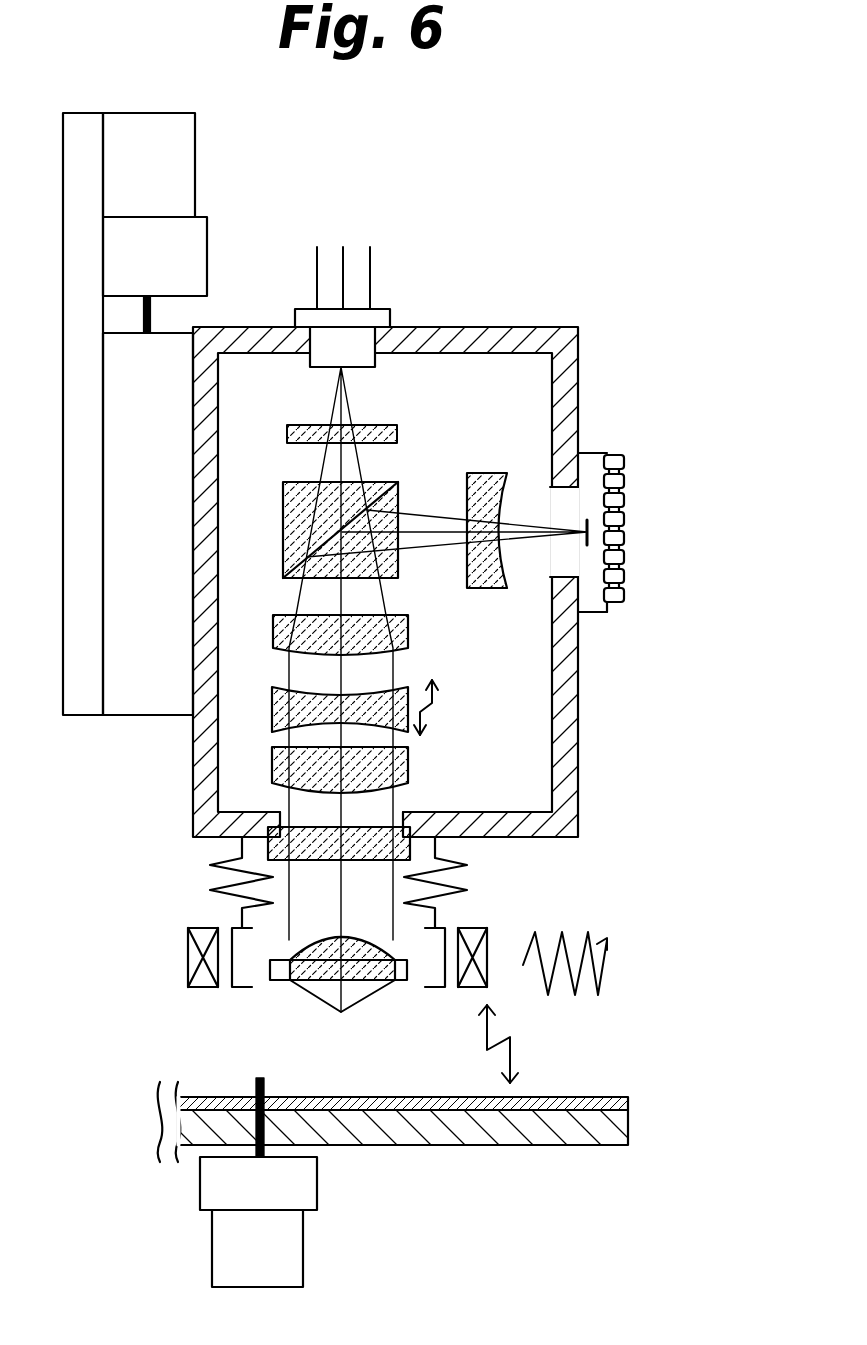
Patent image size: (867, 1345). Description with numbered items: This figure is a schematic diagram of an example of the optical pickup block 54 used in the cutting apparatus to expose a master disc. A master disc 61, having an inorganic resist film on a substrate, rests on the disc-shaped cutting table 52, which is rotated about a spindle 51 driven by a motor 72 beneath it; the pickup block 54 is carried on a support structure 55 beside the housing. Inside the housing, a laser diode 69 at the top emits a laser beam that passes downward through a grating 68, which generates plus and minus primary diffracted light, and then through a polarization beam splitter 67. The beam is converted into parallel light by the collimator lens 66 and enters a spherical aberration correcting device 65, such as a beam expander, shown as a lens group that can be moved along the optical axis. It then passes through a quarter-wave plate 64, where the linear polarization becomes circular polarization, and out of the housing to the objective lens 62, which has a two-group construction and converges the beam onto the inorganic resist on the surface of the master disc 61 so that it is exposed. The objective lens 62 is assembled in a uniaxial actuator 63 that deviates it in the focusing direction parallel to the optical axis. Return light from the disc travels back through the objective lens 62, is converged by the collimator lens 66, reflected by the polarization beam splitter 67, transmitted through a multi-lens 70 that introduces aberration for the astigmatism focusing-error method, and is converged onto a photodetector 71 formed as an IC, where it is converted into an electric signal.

The spindle 51 is at (262, 1078).
The cutting table 52 is at (548, 1135).
The optical pickup block 54 is at (520, 328).
The head feed mechanism 55 is at (187, 245).
The master disc 61 is at (548, 1100).
The objective lens 62 is at (400, 982).
The uniaxial actuator 63 is at (487, 930).
The quarter-wave plate 64 is at (410, 851).
The spherical aberration correcting device 65 is at (273, 715).
The collimator lens 66 is at (410, 632).
The polarization beam splitter 67 is at (393, 482).
The grating 68 is at (393, 423).
The laser diode 69 is at (383, 308).
The multi-lens 70 is at (488, 590).
The photodetector 71 is at (604, 453).
The spindle motor 72 is at (303, 1245).